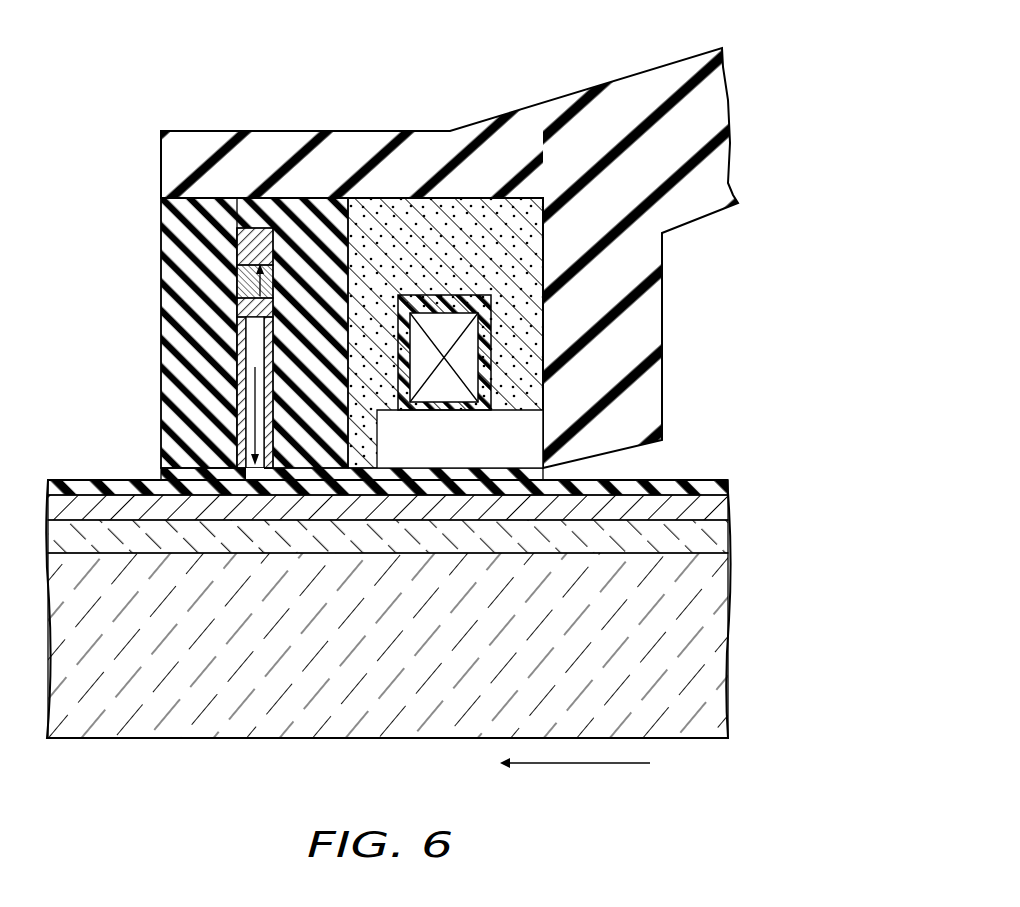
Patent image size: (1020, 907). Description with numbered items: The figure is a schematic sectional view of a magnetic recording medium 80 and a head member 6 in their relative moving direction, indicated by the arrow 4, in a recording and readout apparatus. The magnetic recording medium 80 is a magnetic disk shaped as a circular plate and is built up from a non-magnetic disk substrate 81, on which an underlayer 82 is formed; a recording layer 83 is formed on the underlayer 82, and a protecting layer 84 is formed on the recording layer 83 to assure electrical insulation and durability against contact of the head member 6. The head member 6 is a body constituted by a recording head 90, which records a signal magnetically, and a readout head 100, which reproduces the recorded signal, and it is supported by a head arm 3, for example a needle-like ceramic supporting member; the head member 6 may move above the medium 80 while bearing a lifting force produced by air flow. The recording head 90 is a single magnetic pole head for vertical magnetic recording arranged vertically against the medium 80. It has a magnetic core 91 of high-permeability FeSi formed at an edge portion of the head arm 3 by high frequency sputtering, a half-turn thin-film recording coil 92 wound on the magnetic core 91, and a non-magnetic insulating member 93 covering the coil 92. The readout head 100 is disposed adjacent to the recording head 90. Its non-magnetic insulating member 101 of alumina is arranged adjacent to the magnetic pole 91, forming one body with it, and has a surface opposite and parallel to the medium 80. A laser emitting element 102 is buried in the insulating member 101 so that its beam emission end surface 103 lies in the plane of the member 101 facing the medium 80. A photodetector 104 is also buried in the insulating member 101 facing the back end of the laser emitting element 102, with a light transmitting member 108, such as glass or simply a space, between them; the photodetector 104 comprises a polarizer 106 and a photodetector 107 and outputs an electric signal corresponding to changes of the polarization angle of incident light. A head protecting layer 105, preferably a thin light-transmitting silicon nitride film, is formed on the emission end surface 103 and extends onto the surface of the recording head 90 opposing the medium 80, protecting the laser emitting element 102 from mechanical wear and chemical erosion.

The head arm 3 is at (642, 88).
The direction of motion 4 is at (580, 765).
The head member 6 is at (322, 199).
The magnetic recording medium 80 is at (242, 744).
The non-magnetic disk substrate 81 is at (715, 668).
The underlayer 82 is at (730, 538).
The recording layer 83 is at (727, 509).
The protecting layer 84 is at (713, 480).
The recording head 90 is at (470, 205).
The magnetic core 91 is at (532, 233).
The recording coil 92 is at (432, 400).
The non-magnetic insulating member 93 is at (440, 298).
The readout head 100 is at (235, 196).
The non-magnetic insulating member 101 is at (188, 210).
The laser emitting element 102 is at (240, 368).
The beam emission end surface 103 is at (258, 472).
The photodetector 104 is at (257, 233).
The head protecting layer 105 is at (160, 472).
The polarizer 106 is at (237, 283).
The photodetector 107 is at (237, 247).
The light transmitting member 108 is at (237, 312).